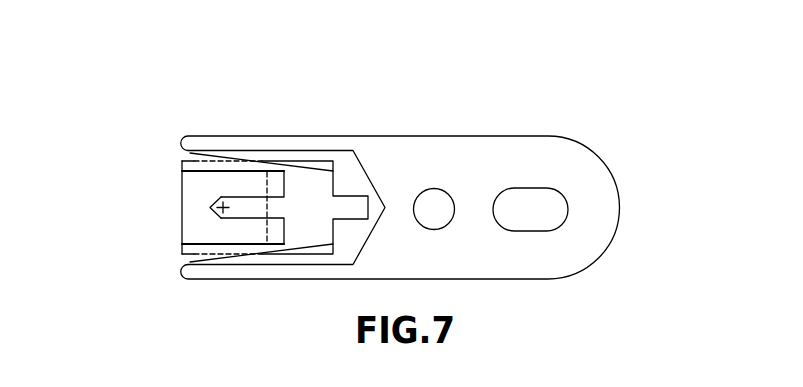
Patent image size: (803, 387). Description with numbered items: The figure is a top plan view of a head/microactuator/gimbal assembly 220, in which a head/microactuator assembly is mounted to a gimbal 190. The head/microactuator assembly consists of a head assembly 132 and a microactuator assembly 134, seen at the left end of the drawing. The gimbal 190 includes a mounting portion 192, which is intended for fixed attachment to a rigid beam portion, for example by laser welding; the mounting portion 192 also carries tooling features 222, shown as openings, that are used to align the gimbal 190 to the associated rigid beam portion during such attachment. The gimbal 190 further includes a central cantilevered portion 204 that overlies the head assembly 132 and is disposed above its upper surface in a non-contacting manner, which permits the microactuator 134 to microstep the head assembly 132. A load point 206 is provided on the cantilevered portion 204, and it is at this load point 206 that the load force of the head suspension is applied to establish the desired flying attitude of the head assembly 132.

The head/microactuator/gimbal assembly 220 is at (166, 102).
The gimbal 190 is at (602, 157).
The microactuator assembly 134 is at (322, 163).
The head assembly 132 is at (197, 192).
The central cantilevered portion 204 is at (243, 207).
The load point 206 is at (222, 208).
The mounting portion 192 is at (437, 160).
The tooling features 222 is at (447, 188).